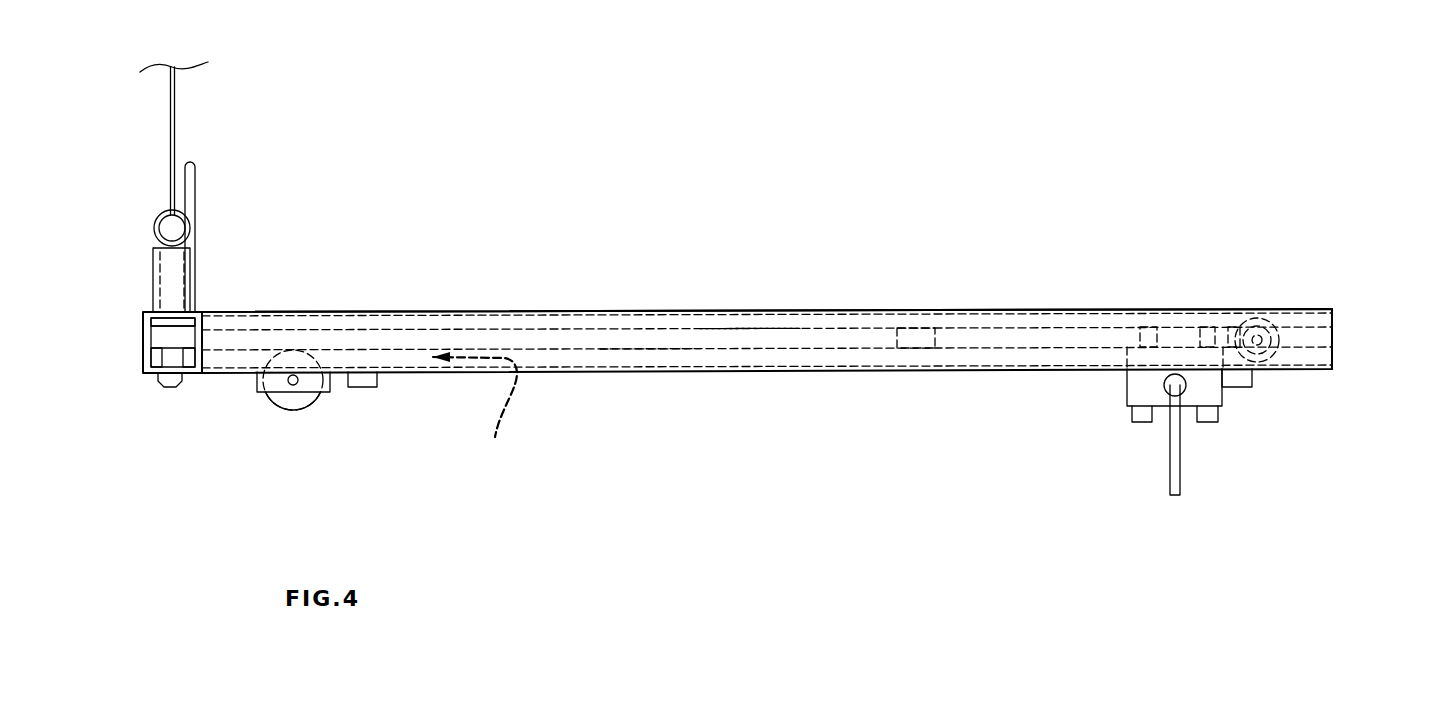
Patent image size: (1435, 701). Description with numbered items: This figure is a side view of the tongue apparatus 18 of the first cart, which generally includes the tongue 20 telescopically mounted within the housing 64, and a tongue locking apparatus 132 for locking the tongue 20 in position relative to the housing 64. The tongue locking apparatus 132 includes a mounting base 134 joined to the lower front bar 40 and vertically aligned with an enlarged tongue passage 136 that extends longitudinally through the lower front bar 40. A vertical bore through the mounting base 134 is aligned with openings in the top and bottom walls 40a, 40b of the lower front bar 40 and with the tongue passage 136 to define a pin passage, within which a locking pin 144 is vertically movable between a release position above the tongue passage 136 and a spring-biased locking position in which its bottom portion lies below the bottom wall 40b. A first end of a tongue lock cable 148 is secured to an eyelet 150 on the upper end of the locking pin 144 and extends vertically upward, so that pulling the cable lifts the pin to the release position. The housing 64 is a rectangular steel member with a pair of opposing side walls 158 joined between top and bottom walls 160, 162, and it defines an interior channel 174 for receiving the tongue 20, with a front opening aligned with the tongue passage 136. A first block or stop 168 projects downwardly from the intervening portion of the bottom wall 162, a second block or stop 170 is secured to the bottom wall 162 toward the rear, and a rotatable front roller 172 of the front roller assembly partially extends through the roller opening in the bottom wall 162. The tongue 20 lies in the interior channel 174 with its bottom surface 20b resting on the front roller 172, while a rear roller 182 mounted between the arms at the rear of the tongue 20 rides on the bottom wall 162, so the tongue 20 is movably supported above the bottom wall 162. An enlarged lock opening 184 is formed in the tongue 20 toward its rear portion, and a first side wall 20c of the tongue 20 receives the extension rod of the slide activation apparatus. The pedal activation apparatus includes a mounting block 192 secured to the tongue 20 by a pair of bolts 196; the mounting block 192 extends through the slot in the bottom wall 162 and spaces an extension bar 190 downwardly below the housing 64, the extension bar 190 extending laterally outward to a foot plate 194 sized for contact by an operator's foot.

The tongue apparatus 18 is at (882, 227).
The tongue 20 is at (173, 337).
The bottom surface 20b is at (645, 347).
The first side wall 20c is at (737, 327).
The lower front bar 40 is at (138, 317).
The top wall 40a is at (165, 305).
The bottom wall 40b is at (167, 370).
The housing 64 is at (523, 310).
The tongue locking apparatus 132 is at (215, 190).
The mounting base 134 is at (193, 260).
The tongue passage 136 is at (188, 360).
The locking pin 144 is at (158, 358).
The tongue lock cable 148 is at (175, 110).
The eyelet 150 is at (193, 223).
The side walls 158 is at (1310, 345).
The top wall 160 is at (1077, 310).
The bottom wall 162 is at (788, 363).
The first block or stop 168 is at (363, 385).
The second block or stop 170 is at (1245, 377).
The front roller 172 is at (290, 400).
The interior channel 174 is at (476, 409).
The rear roller 182 is at (1280, 325).
The lock opening 184 is at (915, 337).
The extension bar 190 is at (1187, 387).
The mounting block 192 is at (1137, 385).
The foot plate 194 is at (1175, 478).
The bolts 196 is at (1138, 413).